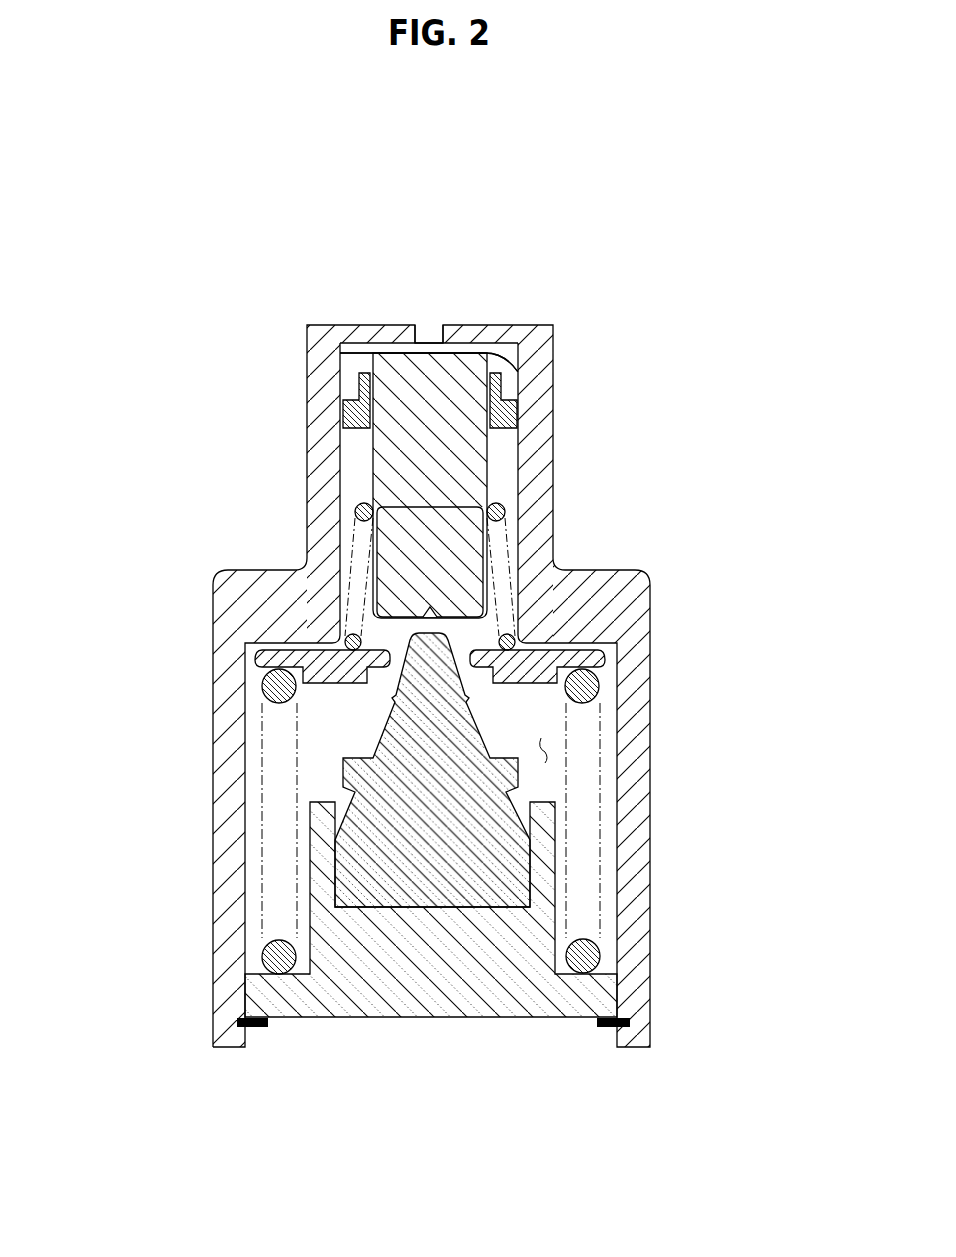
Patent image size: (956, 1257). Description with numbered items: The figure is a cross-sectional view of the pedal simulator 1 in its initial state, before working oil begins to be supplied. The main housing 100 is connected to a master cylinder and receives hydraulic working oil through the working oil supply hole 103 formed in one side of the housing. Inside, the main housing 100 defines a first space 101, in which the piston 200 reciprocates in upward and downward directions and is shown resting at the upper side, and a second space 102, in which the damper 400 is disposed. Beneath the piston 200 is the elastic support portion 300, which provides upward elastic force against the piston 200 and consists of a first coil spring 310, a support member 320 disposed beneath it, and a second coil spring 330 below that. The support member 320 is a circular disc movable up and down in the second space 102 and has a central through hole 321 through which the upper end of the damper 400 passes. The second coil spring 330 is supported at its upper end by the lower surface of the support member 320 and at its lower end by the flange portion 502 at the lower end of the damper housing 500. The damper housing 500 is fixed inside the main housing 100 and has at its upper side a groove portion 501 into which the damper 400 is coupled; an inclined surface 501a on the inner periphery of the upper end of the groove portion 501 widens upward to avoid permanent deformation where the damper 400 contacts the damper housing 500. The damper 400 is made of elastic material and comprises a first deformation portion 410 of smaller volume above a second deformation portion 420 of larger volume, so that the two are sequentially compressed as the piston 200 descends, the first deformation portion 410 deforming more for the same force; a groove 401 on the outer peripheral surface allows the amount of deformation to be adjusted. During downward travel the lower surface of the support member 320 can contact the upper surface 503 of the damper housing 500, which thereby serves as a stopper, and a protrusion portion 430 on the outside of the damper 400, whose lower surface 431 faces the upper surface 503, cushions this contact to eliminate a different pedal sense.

The pedal simulator 1 is at (335, 135).
The main housing 100 is at (635, 578).
The first space 101 is at (450, 343).
The second space 102 is at (547, 748).
The working oil supply hole 103 is at (420, 325).
The piston 200 is at (310, 324).
The elastic support portion 300 is at (223, 358).
The first coil spring 310 is at (350, 572).
The support member 320 is at (318, 668).
The through hole 321 is at (500, 662).
The second coil spring 330 is at (262, 762).
The damper 400 is at (755, 650).
The groove 401 is at (357, 730).
The first deformation portion 410 is at (596, 690).
The second deformation portion 420 is at (510, 757).
The protrusion portion 430 is at (357, 770).
The lower surface 431 is at (345, 843).
The damper housing 500 is at (583, 1017).
The groove portion 501 is at (367, 910).
The inclined surface 501a is at (300, 865).
The flange portion 502 is at (527, 940).
The upper surface 503 is at (550, 790).